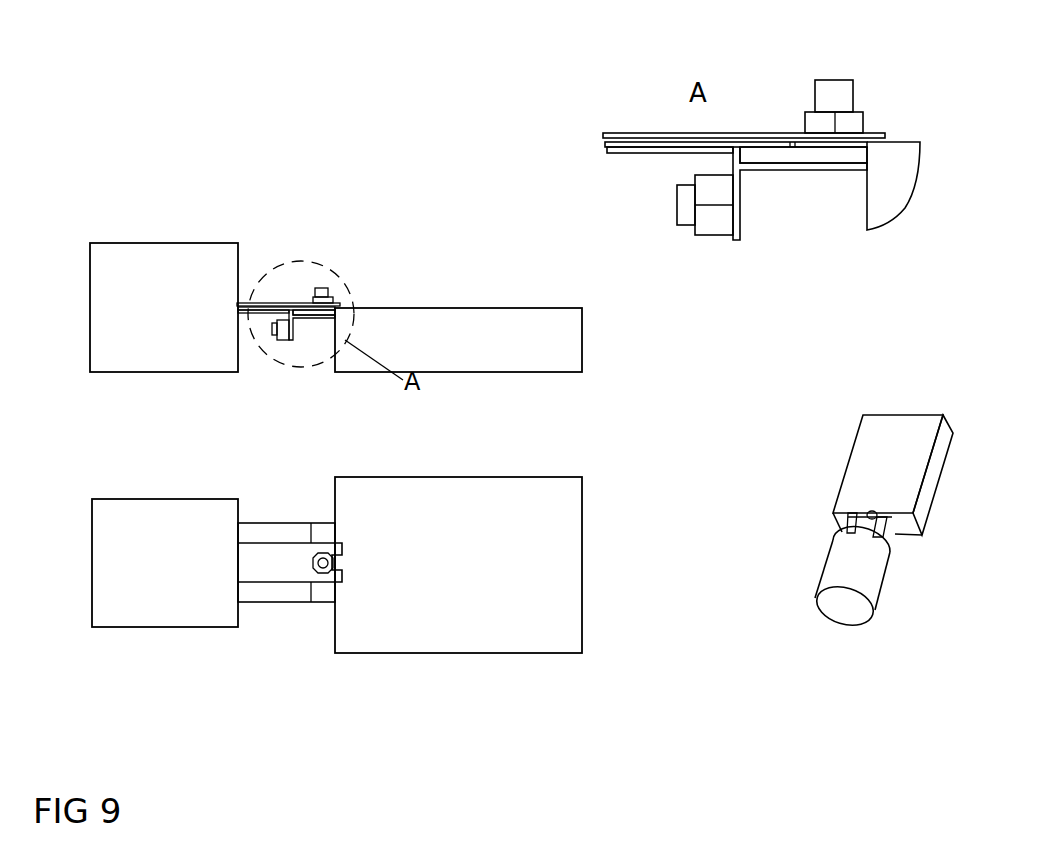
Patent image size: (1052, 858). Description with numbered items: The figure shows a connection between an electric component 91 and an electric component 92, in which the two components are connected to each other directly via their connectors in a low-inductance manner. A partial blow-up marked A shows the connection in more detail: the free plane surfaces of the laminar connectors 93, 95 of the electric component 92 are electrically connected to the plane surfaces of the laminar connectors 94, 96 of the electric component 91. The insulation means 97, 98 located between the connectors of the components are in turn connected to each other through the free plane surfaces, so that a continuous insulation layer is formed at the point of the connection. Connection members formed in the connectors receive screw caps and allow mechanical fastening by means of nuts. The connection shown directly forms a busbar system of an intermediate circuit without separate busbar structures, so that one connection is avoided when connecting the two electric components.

The electric component 91 is at (133, 283).
The electric component 92 is at (566, 352).
The laminar connector 93 is at (822, 147).
The laminar connector 94 is at (652, 130).
The laminar connector 95 is at (802, 167).
The laminar connector 96 is at (643, 158).
The insulation means 97 is at (777, 157).
The insulation means 98 is at (607, 145).